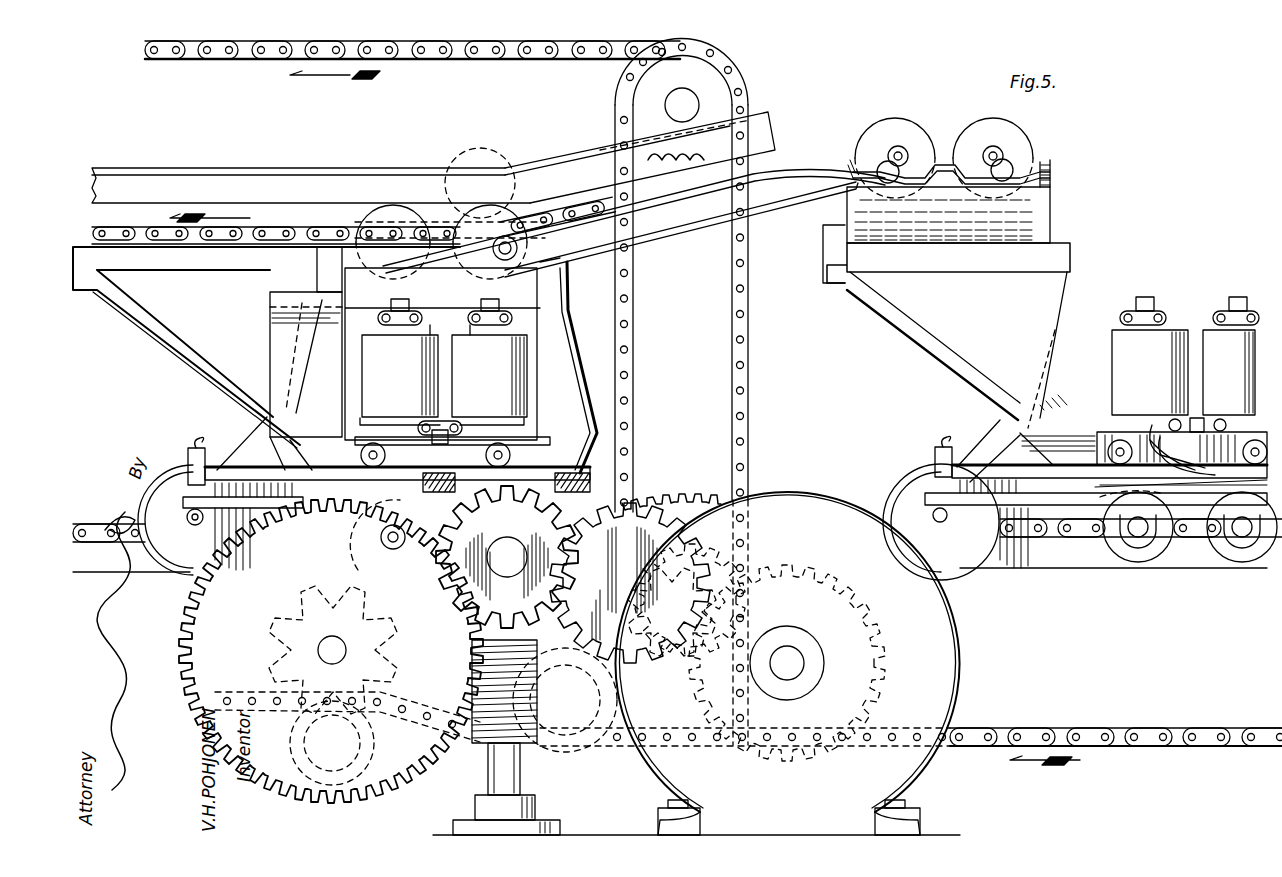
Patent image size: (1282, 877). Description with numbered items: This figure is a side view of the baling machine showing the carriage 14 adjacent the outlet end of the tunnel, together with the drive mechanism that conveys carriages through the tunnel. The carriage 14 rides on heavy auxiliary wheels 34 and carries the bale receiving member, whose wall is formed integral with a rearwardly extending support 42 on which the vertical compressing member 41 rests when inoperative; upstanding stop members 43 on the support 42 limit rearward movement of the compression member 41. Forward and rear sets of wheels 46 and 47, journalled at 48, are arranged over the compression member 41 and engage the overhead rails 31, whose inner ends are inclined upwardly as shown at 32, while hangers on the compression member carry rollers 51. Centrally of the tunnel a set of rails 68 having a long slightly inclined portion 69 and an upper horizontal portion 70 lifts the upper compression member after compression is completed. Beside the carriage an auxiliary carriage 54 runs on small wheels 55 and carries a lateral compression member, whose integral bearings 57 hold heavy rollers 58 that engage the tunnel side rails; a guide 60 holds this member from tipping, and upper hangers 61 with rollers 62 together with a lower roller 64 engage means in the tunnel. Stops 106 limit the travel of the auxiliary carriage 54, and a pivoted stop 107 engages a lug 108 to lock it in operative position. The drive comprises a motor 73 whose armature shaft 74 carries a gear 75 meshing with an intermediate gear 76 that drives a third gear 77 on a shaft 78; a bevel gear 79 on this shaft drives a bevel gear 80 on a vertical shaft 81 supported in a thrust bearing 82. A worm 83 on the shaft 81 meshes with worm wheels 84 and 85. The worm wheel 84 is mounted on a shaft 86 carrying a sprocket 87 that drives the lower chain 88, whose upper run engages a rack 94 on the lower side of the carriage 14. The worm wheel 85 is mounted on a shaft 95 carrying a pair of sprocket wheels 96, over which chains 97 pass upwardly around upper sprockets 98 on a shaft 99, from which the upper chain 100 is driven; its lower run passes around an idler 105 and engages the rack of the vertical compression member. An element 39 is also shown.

The carriage 14 is at (590, 370).
The overhead rails 31 is at (432, 167).
The upwardly inclined inner ends 32 is at (598, 142).
The auxiliary wheels 34 is at (1138, 563).
The rod 39 is at (565, 262).
The vertical compressing member 41 is at (1052, 226).
The support 42 is at (236, 268).
The stop members 43 is at (823, 238).
The forward wheels 46 is at (505, 200).
The rear wheels 47 is at (406, 196).
The journals 48 is at (452, 241).
The rollers 51 is at (1043, 147).
The auxiliary carriage 54 is at (555, 426).
The small wheels 55 is at (361, 456).
The integral bearings 57 is at (397, 330).
The heavy rollers 58 is at (808, 373).
The guide 60 is at (312, 298).
The upper hangers 61 is at (450, 303).
The rollers 62 is at (470, 330).
The roller 64 is at (1200, 418).
The rails 68 is at (800, 177).
The inclined portion 69 is at (702, 230).
The horizontal portion 70 is at (985, 196).
The motor 73 is at (935, 588).
The armature shaft 74 is at (805, 665).
The gear 75 is at (862, 598).
The intermediate gear 76 is at (704, 560).
The third gear 77 is at (452, 623).
The shaft 78 is at (507, 547).
The bevel gear 79 is at (630, 576).
The bevel gear 80 is at (600, 480).
The vertical shaft 81 is at (493, 768).
The thrust bearing 82 is at (538, 815).
The worm 83 is at (565, 700).
The worm wheel 84 is at (347, 729).
The worm wheel 85 is at (710, 496).
The shaft 86 is at (337, 640).
The sprocket 87 is at (292, 598).
The lower chain 88 is at (1050, 538).
The rack 94 is at (1181, 492).
The shaft 95 is at (911, 688).
The sprocket wheels 96 is at (672, 609).
The chains 97 is at (752, 430).
The upper sprockets 98 is at (742, 92).
The shaft 99 is at (690, 82).
The upper chain 100 is at (430, 60).
The idler 105 is at (490, 146).
The stops 106 is at (210, 435).
The pivoted stop 107 is at (345, 430).
The lug 108 is at (1152, 425).